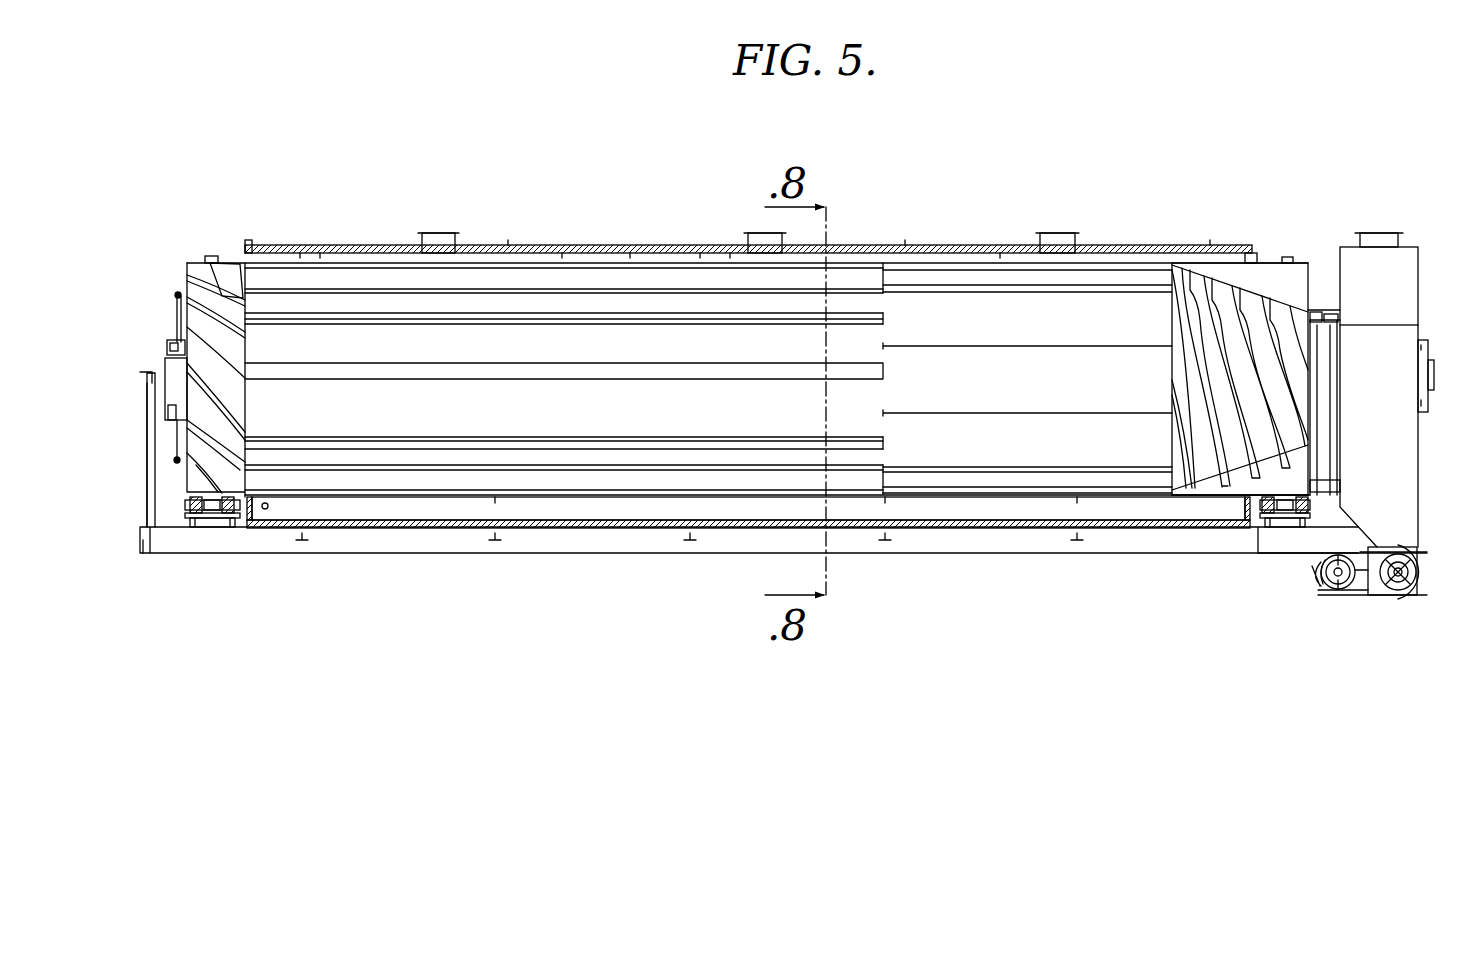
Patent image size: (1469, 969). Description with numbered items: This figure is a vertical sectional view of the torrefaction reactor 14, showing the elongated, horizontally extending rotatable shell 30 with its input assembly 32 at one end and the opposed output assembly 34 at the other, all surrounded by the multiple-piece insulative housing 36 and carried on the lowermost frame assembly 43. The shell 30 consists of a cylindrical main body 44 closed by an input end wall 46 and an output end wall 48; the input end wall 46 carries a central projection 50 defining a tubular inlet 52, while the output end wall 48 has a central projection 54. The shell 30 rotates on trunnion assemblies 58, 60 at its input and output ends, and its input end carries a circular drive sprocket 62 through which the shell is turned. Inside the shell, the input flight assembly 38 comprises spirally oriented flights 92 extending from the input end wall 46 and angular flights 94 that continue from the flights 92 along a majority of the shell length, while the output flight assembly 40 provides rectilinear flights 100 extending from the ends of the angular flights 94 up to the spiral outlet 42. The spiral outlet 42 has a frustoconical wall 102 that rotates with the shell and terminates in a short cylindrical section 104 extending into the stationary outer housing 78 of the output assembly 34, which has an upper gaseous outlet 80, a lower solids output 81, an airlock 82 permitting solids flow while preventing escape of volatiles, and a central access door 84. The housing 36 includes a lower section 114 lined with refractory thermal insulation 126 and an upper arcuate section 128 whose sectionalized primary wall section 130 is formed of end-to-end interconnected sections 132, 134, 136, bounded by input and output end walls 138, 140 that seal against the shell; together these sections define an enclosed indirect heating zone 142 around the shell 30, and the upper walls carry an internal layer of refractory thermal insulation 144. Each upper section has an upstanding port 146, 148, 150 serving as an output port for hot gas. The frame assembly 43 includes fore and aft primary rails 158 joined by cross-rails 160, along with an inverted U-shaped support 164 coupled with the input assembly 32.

The torrefaction reactor 14 is at (580, 158).
The shell 30 is at (237, 331).
The input assembly 32 is at (154, 355).
The output assembly 34 is at (1390, 373).
The insulative housing 36 is at (1027, 356).
The input flight assembly 38 is at (748, 546).
The output flight assembly 40 is at (976, 490).
The spiral outlet 42 is at (1284, 290).
The frame assembly 43 is at (905, 556).
The cylindrical main body 44 is at (776, 344).
The input end wall 46 is at (208, 256).
The output end wall 48 is at (1320, 480).
The central projection 50 is at (175, 325).
The tubular inlet 52 is at (168, 365).
The central projection 54 is at (1320, 310).
The trunnion assembly 58 is at (220, 522).
The trunnion assembly 60 is at (1283, 528).
The drive sprocket 62 is at (177, 462).
The outer housing 78 is at (1420, 272).
The gaseous outlet 80 is at (1385, 233).
The solids output 81 is at (1412, 552).
The airlock 82 is at (1395, 597).
The access door 84 is at (1428, 410).
The spirally oriented flights 92 is at (237, 365).
The angular flights 94 is at (445, 372).
The rectilinear flights 100 is at (968, 347).
The frustoconical wall 102 is at (1205, 478).
The cylindrical section 104 is at (1335, 405).
The lower section 114 is at (776, 511).
The refractory thermal insulation 126 is at (1115, 540).
The upper arcuate section 128 is at (1248, 328).
The primary wall section 130 is at (761, 203).
The wall section 132 is at (333, 245).
The wall section 134 is at (690, 245).
The wall section 136 is at (1000, 248).
The input end wall 138 is at (247, 240).
The output end wall 140 is at (1252, 250).
The indirect heating zone 142 is at (630, 250).
The refractory thermal insulation 144 is at (562, 250).
The port 146 is at (438, 233).
The port 148 is at (760, 233).
The port 150 is at (1060, 233).
The primary rails 158 is at (620, 540).
The cross-rails 160 is at (143, 540).
The U-shaped support 164 is at (152, 510).